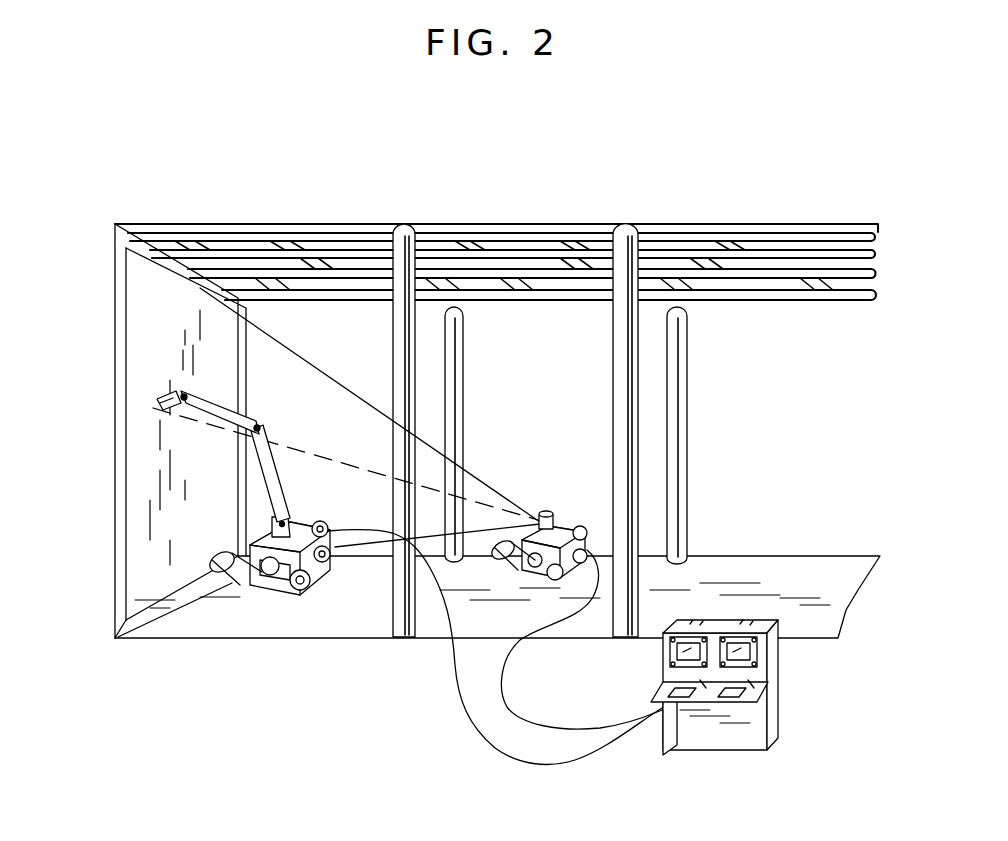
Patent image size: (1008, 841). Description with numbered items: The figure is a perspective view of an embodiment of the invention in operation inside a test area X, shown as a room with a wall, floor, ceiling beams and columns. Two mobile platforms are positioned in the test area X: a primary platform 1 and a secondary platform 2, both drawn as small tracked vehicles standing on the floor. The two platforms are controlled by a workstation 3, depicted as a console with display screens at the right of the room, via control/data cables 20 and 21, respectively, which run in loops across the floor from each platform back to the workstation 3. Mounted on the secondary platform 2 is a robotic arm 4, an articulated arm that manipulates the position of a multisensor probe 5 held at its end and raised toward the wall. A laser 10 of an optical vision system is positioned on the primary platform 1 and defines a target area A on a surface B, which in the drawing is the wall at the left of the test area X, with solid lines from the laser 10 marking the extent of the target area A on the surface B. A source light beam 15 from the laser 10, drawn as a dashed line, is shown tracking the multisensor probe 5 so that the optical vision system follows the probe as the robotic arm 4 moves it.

The primary platform 1 is at (562, 592).
The secondary platform 2 is at (298, 595).
The workstation 3 is at (778, 722).
The robotic arm 4 is at (283, 495).
The multisensor probe 5 is at (165, 403).
The laser 10 is at (547, 510).
The source light beam 15 is at (293, 448).
The control/data cable 20 is at (573, 735).
The control/data cable 21 is at (625, 740).
The target area A is at (133, 497).
The surface B is at (118, 636).
The test area X is at (765, 565).